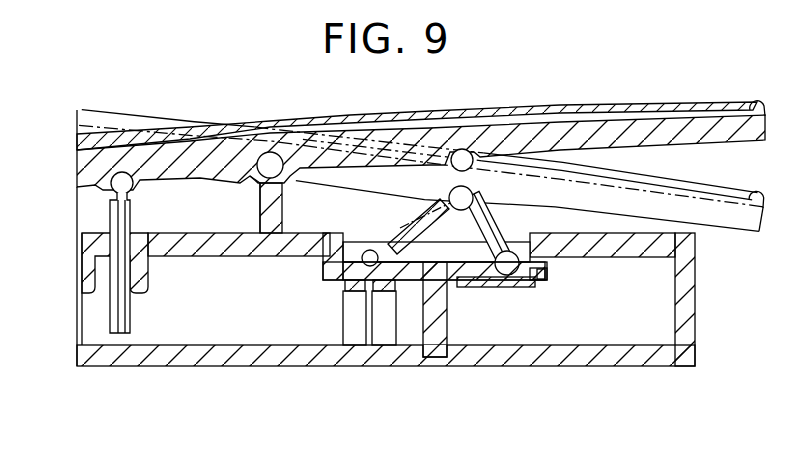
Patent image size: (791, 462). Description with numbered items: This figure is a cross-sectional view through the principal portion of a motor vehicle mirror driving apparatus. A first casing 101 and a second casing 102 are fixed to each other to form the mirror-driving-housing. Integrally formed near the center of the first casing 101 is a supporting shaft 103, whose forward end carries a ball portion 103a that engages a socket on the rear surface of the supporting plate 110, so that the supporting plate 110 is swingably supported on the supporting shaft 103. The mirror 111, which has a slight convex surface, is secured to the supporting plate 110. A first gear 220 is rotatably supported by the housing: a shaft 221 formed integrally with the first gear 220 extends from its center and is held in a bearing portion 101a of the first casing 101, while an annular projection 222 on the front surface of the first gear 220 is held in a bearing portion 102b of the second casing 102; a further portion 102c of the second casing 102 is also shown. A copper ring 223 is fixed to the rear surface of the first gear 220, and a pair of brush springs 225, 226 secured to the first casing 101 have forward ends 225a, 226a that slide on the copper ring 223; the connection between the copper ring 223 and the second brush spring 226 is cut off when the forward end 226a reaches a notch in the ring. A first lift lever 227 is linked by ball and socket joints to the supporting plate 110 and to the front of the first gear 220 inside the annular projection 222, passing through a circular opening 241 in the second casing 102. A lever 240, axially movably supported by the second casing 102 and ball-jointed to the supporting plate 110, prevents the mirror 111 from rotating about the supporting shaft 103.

The first casing 101 is at (386, 306).
The bearing portion 101a is at (467, 398).
The second casing 102 is at (420, 221).
The bearing portion 102b is at (391, 329).
The lid bracket 102c is at (84, 263).
The supporting shaft 103 is at (228, 153).
The ball portion 103a is at (270, 125).
The supporting plate 110 is at (741, 87).
The mirror 111 is at (417, 104).
The first gear 220 is at (445, 356).
The shaft 221 is at (445, 340).
The annular projection 222 is at (572, 344).
The copper ring 223 is at (496, 351).
The brush spring 225 is at (363, 371).
The forward end of brush spring 225a is at (332, 352).
The second brush spring 226 is at (405, 371).
The forward end of second brush spring 226a is at (395, 352).
The first lift lever 227 is at (478, 127).
The lever 240 is at (77, 252).
The circular opening 241 is at (436, 230).